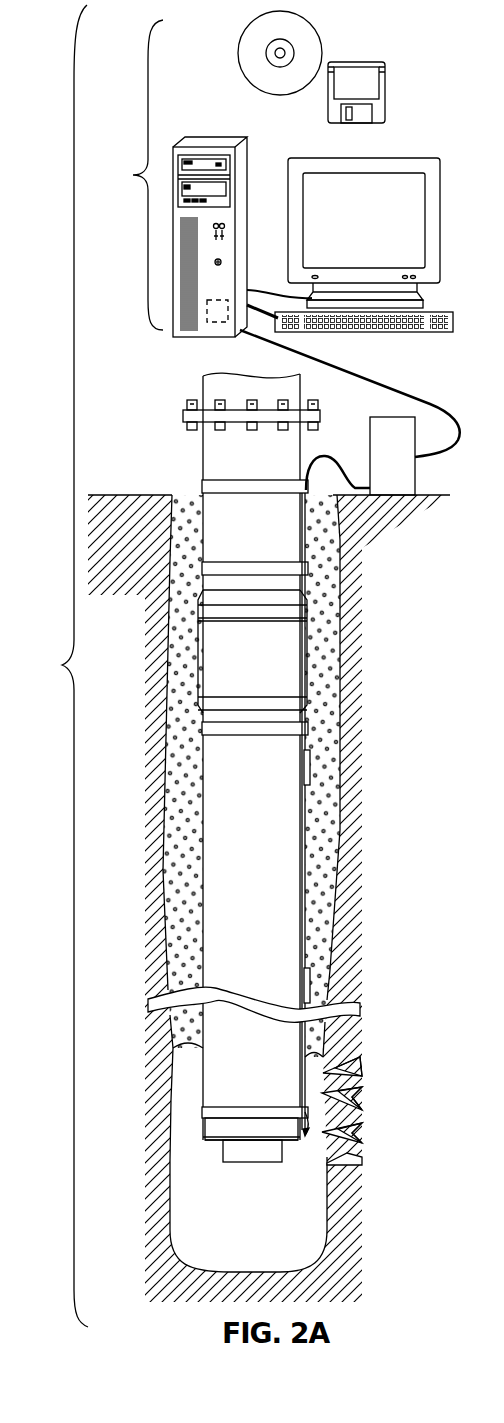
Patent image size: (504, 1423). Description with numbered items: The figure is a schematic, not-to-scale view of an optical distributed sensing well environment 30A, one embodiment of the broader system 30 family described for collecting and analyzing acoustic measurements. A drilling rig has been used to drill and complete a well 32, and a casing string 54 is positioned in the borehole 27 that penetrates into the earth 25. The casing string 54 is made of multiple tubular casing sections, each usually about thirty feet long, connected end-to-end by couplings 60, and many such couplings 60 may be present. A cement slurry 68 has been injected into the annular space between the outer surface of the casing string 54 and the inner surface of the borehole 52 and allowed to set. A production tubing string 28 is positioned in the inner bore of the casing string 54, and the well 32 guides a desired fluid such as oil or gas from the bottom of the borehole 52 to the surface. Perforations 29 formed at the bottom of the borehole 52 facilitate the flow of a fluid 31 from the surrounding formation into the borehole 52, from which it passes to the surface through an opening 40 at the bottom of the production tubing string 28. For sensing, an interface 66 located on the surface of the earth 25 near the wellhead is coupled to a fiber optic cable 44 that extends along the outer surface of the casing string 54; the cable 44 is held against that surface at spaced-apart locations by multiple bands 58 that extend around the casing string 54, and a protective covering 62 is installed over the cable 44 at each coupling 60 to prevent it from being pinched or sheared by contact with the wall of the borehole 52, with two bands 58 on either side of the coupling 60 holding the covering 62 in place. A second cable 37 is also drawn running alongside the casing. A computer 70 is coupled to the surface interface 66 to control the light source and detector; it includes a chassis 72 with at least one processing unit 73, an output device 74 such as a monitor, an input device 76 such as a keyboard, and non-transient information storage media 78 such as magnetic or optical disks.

The optical distributed sensing well environment 30A is at (45, 666).
The system 30 is at (493, 1020).
The computer 70 is at (130, 175).
The chassis 72 is at (245, 173).
The processing unit 73 is at (215, 318).
The output device 74 is at (438, 228).
The input device 76 is at (435, 312).
The non-transient information storage media 78 is at (342, 62).
The well 32 is at (147, 412).
The borehole 27 is at (187, 493).
The earth 25 is at (153, 530).
The borehole 52 is at (340, 598).
The casing string 54 is at (203, 468).
The bands 58 is at (232, 478).
The fiber optic cable 44 is at (325, 455).
The interface 66 is at (417, 487).
The couplings 60 is at (287, 673).
The protective covering 62 is at (308, 647).
The fiber optic cable 37 is at (310, 772).
The cement slurry 68 is at (325, 850).
The perforations 29 is at (368, 1053).
The fluid 31 is at (325, 1147).
The production tubing string 28 is at (240, 1155).
The opening 40 is at (247, 1166).